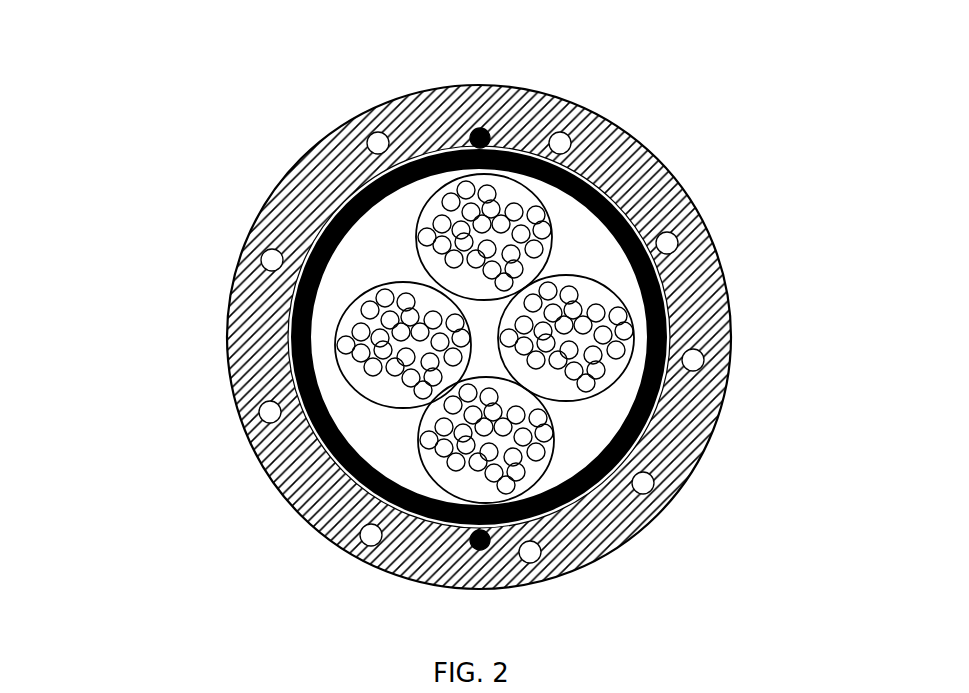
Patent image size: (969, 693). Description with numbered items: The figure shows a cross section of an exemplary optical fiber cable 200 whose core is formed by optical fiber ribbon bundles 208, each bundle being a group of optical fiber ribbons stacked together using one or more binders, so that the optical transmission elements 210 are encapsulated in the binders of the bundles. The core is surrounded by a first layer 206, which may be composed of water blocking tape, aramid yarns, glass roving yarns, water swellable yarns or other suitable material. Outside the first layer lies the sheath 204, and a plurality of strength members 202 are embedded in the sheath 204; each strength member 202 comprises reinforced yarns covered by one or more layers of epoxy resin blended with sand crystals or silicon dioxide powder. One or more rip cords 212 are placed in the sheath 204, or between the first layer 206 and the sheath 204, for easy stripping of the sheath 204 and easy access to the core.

The optical fiber cable 200 is at (242, 93).
The strength members 202 is at (667, 242).
The sheath 204 is at (677, 447).
The first layer 206 is at (568, 512).
The optical fiber ribbon bundles 208 is at (537, 188).
The optical transmission elements 210 is at (620, 340).
The rip cords 212 is at (488, 130).